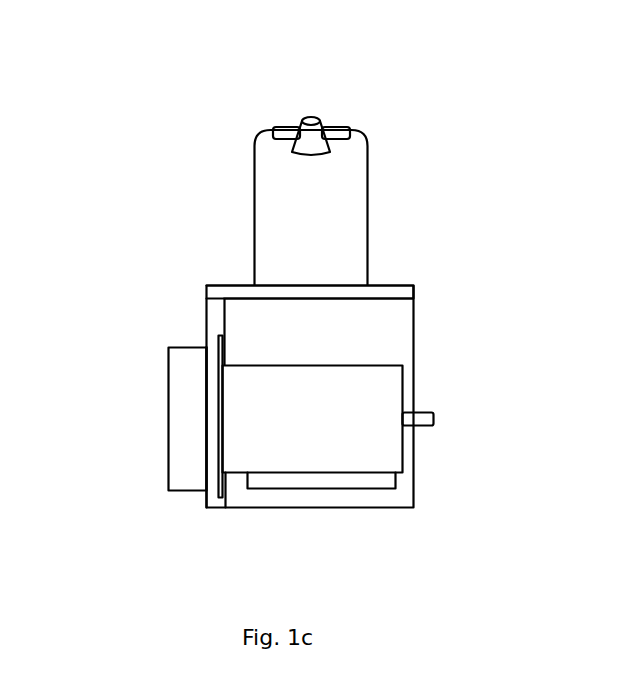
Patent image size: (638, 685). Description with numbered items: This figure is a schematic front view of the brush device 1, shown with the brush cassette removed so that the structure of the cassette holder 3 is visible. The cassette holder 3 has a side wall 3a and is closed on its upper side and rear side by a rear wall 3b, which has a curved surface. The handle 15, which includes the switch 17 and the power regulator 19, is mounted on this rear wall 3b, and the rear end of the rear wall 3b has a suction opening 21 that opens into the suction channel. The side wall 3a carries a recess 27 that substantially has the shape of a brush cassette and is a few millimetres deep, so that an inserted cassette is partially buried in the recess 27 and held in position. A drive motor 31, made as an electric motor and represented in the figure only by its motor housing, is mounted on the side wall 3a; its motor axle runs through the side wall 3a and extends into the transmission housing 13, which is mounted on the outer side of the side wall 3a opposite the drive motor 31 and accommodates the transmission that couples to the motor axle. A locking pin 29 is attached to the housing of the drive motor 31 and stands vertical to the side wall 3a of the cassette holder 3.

The brush device 1 is at (112, 184).
The cassette holder 3 is at (215, 262).
The side wall 3a is at (202, 454).
The rear wall 3b is at (399, 281).
The transmission housing 13 is at (186, 382).
The handle 15 is at (353, 191).
The switch 17 is at (334, 118).
The power regulator 19 is at (297, 115).
The suction opening 21 is at (267, 488).
The recess 27 is at (219, 332).
The locking pin 29 is at (439, 407).
The drive motor 31 is at (363, 391).